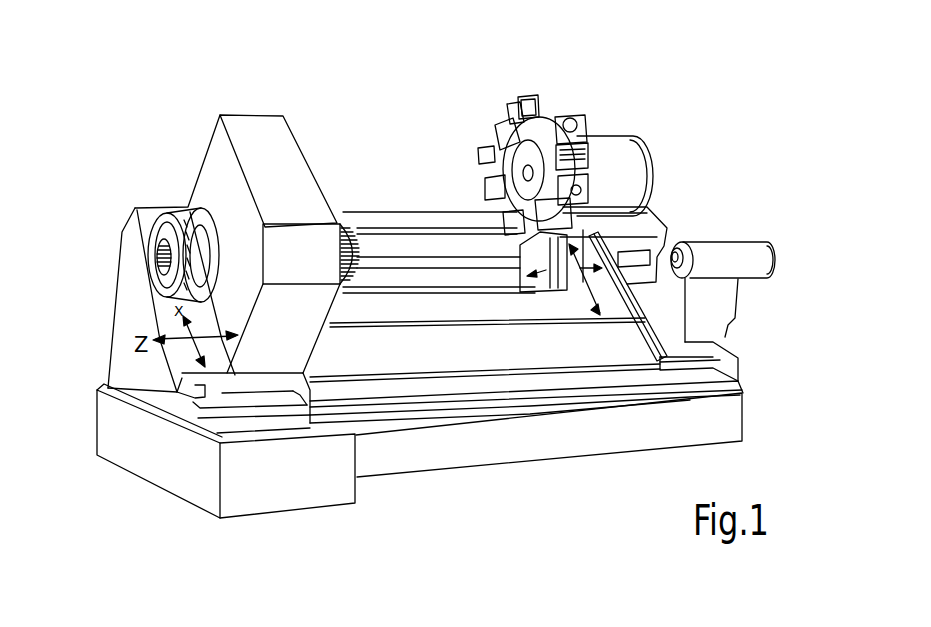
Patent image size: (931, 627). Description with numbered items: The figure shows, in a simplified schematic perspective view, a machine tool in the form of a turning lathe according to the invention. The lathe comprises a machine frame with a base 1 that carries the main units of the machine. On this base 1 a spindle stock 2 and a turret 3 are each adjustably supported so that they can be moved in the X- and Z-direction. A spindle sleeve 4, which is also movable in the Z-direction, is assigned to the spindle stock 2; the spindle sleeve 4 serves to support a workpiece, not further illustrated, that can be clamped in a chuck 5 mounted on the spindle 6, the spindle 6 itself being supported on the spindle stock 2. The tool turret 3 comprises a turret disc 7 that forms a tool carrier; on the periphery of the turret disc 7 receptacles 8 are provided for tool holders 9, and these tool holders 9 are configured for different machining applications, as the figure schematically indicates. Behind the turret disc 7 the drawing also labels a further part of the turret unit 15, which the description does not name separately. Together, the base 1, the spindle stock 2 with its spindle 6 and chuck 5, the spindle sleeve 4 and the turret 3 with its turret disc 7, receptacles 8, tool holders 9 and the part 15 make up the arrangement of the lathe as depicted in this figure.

The base 1 is at (508, 450).
The spindle stock 2 is at (273, 145).
The turret 3 is at (632, 121).
The spindle sleeve 4 is at (730, 250).
The chuck 5 is at (343, 222).
The spindle 6 is at (192, 218).
The turret disc 7 is at (535, 130).
The receptacles 8 is at (597, 185).
The tool holders 9 is at (527, 97).
The turret housing 15 is at (627, 167).